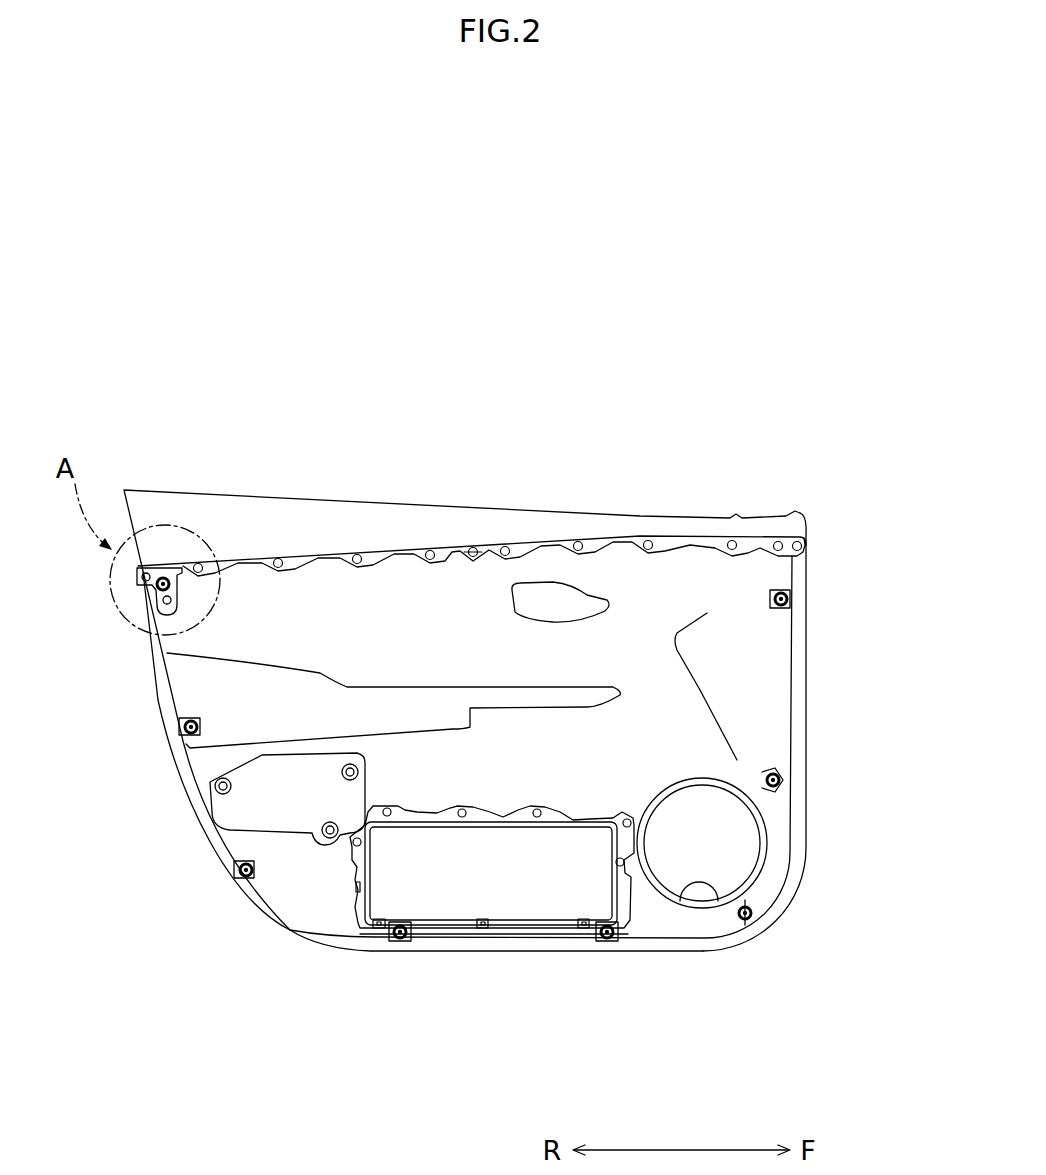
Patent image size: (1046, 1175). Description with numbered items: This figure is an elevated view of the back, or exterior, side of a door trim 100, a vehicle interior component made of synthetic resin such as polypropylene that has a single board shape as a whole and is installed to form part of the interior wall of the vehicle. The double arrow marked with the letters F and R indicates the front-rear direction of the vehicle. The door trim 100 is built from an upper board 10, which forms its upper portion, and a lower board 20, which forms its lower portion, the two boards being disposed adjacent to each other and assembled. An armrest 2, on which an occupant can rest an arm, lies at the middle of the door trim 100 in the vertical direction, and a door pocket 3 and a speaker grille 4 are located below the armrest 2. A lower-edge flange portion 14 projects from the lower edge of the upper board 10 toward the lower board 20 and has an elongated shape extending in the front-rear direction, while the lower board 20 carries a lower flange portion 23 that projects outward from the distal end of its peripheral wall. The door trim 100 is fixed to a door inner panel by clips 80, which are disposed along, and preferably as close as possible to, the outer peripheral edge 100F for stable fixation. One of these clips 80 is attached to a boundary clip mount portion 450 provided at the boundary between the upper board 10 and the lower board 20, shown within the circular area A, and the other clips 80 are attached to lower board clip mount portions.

The armrest 2 is at (222, 728).
The door pocket 3 is at (477, 887).
The speaker grille 4 is at (717, 897).
The upper board 10 is at (824, 522).
The lower-edge flange portion 14 is at (620, 543).
The lower board 20 is at (832, 570).
The lower flange portion 23 is at (158, 665).
The clip 80 is at (162, 592).
The door trim 100 is at (505, 694).
The outer peripheral edge 100F is at (806, 681).
The boundary clip mount portion 450 is at (147, 583).